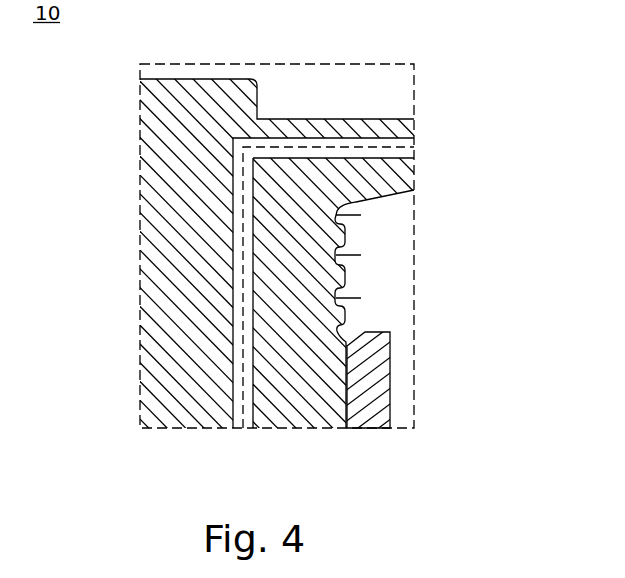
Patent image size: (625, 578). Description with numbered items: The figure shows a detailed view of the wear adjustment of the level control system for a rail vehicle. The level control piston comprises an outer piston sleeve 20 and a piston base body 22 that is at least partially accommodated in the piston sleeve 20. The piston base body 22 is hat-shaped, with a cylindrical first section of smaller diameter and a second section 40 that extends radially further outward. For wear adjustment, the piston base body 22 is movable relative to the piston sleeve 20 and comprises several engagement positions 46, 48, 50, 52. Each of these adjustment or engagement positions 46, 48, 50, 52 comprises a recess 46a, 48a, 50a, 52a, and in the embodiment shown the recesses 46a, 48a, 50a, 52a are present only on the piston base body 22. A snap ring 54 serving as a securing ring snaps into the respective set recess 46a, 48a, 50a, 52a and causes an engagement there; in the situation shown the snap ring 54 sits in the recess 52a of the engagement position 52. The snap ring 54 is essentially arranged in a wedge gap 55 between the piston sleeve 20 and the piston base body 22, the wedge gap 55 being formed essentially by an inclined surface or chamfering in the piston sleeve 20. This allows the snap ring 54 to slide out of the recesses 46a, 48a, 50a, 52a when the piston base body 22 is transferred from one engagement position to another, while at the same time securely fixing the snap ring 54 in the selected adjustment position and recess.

The piston sleeve 20 is at (376, 377).
The piston base body 22 is at (158, 430).
The second section 40 is at (373, 198).
The engagement position 46 is at (336, 222).
The recess 46a is at (343, 206).
The engagement position 48 is at (336, 231).
The recess 48a is at (338, 268).
The engagement position 50 is at (338, 283).
The recess 50a is at (336, 297).
The engagement position 52 is at (342, 340).
The recess 52a is at (345, 342).
The snap ring 54 is at (352, 341).
The wedge gap 55 is at (387, 332).